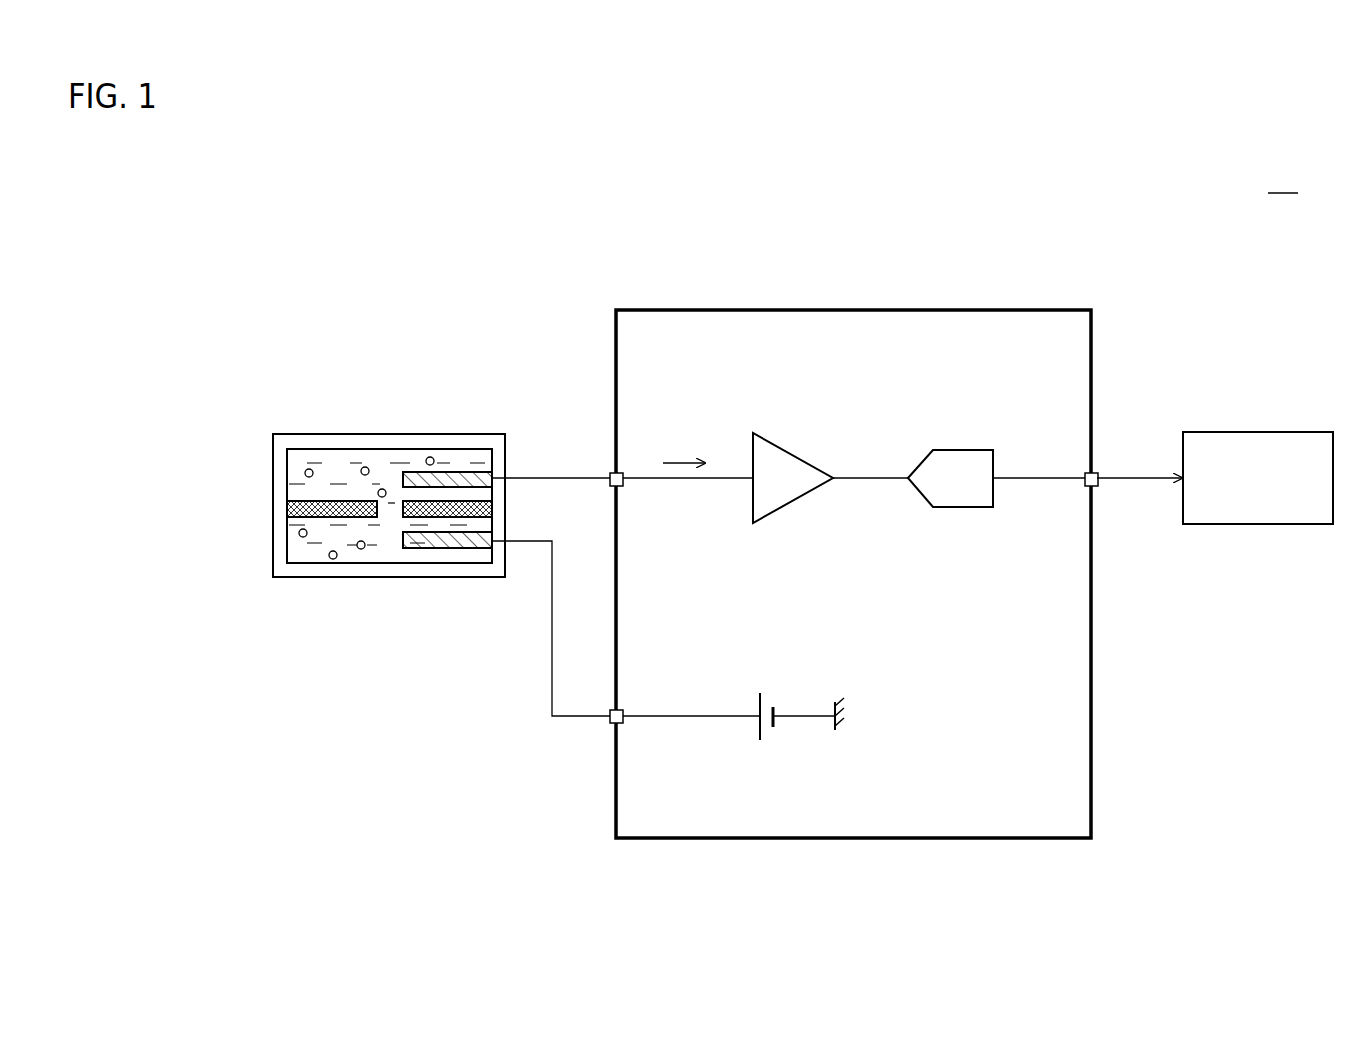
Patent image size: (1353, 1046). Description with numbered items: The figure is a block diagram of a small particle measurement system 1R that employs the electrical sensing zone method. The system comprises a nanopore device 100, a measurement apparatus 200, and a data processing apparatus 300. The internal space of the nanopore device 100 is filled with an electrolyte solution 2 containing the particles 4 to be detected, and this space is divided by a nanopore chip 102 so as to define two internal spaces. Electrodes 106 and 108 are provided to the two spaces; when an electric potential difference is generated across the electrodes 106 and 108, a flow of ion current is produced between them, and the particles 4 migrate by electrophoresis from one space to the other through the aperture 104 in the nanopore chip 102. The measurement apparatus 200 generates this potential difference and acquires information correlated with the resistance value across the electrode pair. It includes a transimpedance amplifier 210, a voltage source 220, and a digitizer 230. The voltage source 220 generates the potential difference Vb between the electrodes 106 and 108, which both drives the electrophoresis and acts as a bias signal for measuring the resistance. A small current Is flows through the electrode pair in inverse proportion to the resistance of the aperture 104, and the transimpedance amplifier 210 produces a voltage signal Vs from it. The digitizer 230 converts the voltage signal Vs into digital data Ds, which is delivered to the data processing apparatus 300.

The small particle measurement system 1R is at (1283, 179).
The electrolyte solution 2 is at (332, 462).
The particles 4 is at (383, 489).
The nanopore device 100 is at (437, 434).
The nanopore chip 102 is at (295, 506).
The aperture 104 is at (393, 518).
The electrode 106 is at (470, 471).
The electrode 108 is at (462, 547).
The measurement apparatus 200 is at (854, 548).
The transimpedance amplifier 210 is at (790, 451).
The voltage source 220 is at (774, 695).
The digitizer 230 is at (960, 450).
The data processing apparatus 300 is at (1272, 432).